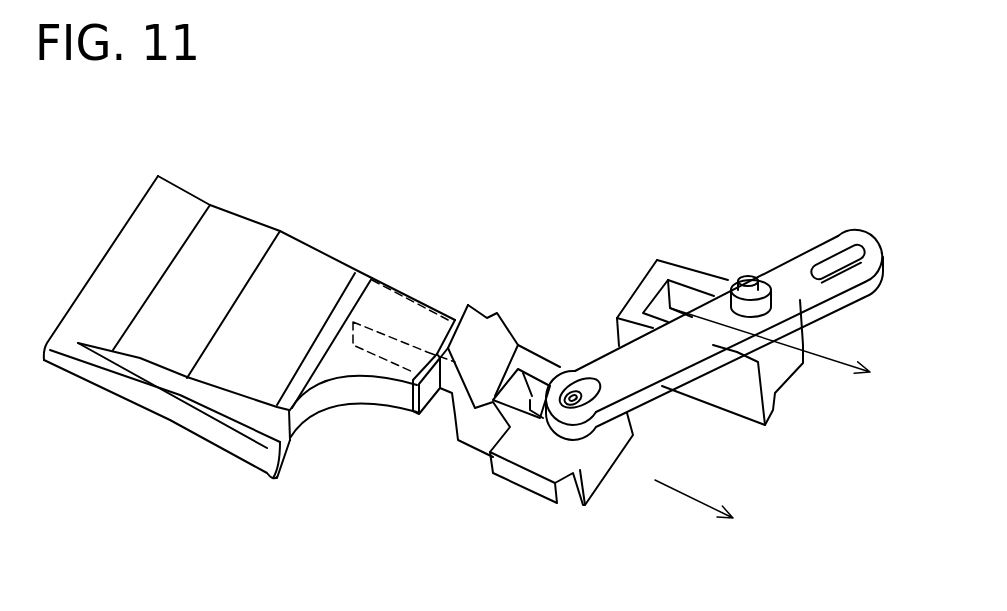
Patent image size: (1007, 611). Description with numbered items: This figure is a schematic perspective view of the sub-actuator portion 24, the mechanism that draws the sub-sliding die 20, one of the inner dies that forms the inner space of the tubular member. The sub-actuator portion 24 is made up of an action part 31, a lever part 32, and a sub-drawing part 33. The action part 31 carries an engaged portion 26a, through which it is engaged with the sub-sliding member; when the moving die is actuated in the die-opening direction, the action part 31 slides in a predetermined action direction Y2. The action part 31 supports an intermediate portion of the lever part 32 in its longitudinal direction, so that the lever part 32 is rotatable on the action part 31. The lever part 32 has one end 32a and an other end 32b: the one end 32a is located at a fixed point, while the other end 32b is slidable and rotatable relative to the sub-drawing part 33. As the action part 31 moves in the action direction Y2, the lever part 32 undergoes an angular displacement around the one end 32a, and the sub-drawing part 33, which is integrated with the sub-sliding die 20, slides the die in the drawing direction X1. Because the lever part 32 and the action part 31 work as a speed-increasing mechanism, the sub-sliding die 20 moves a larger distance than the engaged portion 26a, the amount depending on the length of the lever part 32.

The sub-sliding die 20 is at (393, 318).
The sub-actuator portion 24 is at (714, 310).
The engaged portion 26a is at (690, 292).
The action part 31 is at (730, 403).
The lever part 32 is at (714, 306).
The one end 32a is at (852, 238).
The other end 32b is at (574, 395).
The sub-drawing part 33 is at (515, 490).
The drawing direction X1 is at (652, 500).
The action direction Y2 is at (835, 362).